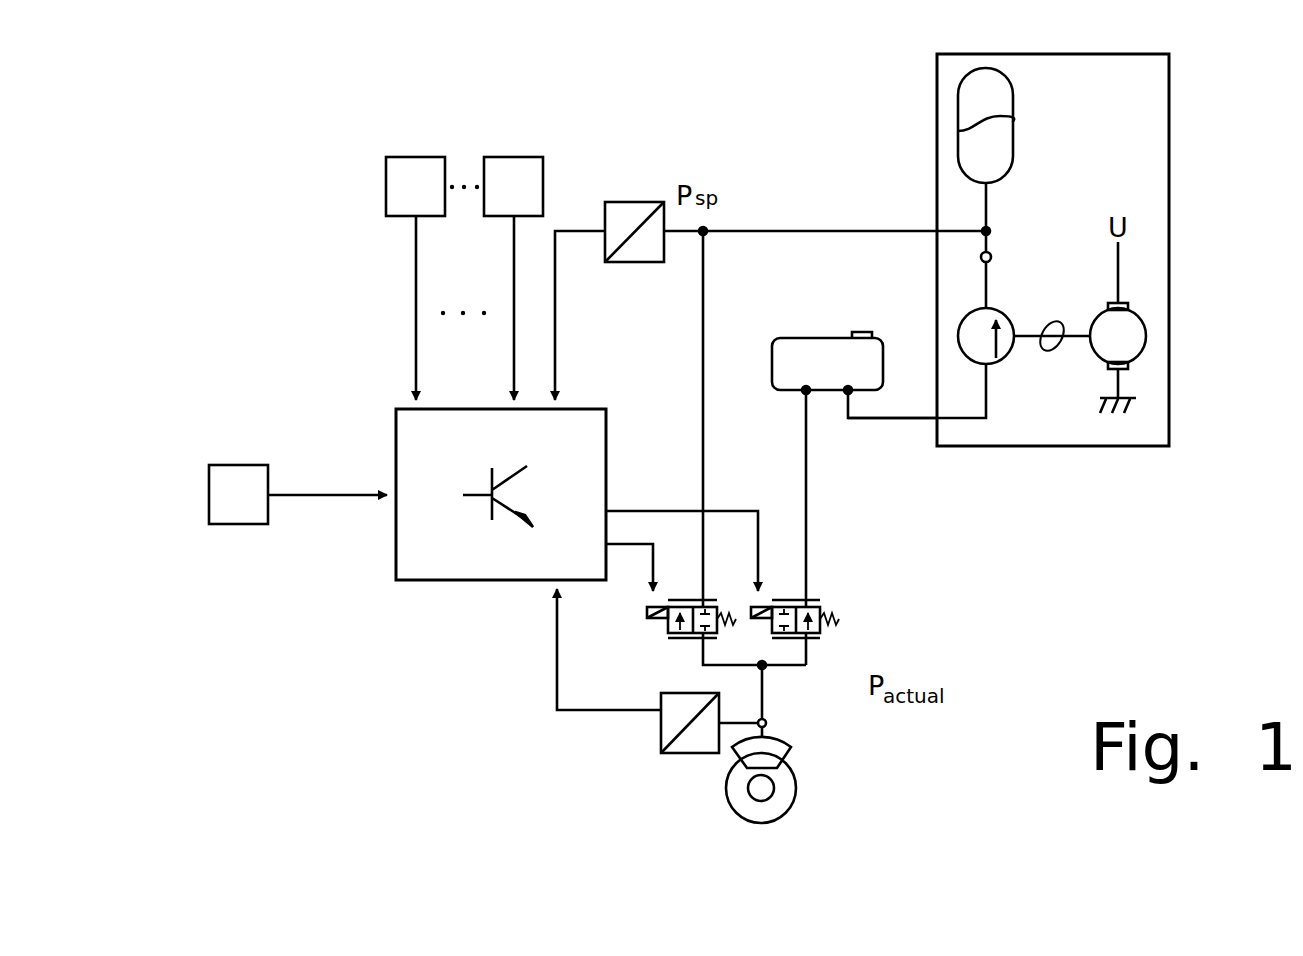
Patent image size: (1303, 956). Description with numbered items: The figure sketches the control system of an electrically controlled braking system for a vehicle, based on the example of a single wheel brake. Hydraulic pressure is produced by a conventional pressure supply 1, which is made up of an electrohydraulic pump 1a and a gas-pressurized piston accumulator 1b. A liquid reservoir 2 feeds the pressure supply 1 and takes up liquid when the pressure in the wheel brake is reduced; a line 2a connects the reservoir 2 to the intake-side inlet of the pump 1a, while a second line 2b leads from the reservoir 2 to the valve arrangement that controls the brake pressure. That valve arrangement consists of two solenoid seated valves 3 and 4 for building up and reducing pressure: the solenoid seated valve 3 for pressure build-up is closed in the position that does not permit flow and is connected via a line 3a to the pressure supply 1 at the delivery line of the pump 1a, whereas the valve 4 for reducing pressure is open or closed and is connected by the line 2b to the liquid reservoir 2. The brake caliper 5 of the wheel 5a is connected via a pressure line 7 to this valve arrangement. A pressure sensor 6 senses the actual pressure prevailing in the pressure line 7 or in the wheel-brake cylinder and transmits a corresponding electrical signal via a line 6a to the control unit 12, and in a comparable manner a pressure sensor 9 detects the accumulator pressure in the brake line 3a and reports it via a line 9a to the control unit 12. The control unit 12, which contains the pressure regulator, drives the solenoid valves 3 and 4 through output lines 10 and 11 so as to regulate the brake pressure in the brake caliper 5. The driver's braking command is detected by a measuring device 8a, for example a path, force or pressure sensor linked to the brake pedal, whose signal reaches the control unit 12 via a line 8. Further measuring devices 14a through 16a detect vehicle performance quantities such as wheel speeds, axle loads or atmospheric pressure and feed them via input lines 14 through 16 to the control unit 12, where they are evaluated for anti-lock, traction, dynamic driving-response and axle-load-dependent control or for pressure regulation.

The pressure supply 1 is at (1101, 53).
The electrohydraulic pump 1a is at (1036, 302).
The gas-pressurized piston accumulator 1b is at (1014, 143).
The liquid reservoir 2 is at (795, 352).
The line 2a is at (872, 420).
The second line 2b is at (812, 508).
The solenoid seated valve 3 is at (717, 605).
The line 3a is at (831, 228).
The valve 4 is at (821, 605).
The brake caliper 5 is at (788, 745).
The wheel 5a is at (800, 811).
The pressure sensor 6 is at (661, 753).
The line 6a is at (573, 712).
The pressure line 7 is at (766, 702).
The line 8 is at (333, 498).
The measuring device 8a is at (226, 525).
The pressure sensor 9 is at (651, 263).
The line 9a is at (555, 352).
The output line 10 is at (655, 566).
The output line 11 is at (726, 510).
The control unit 12 is at (406, 582).
The input line 14 is at (416, 299).
The measuring device 14a is at (399, 157).
The input line 16 is at (514, 265).
The measuring device 16a is at (497, 157).